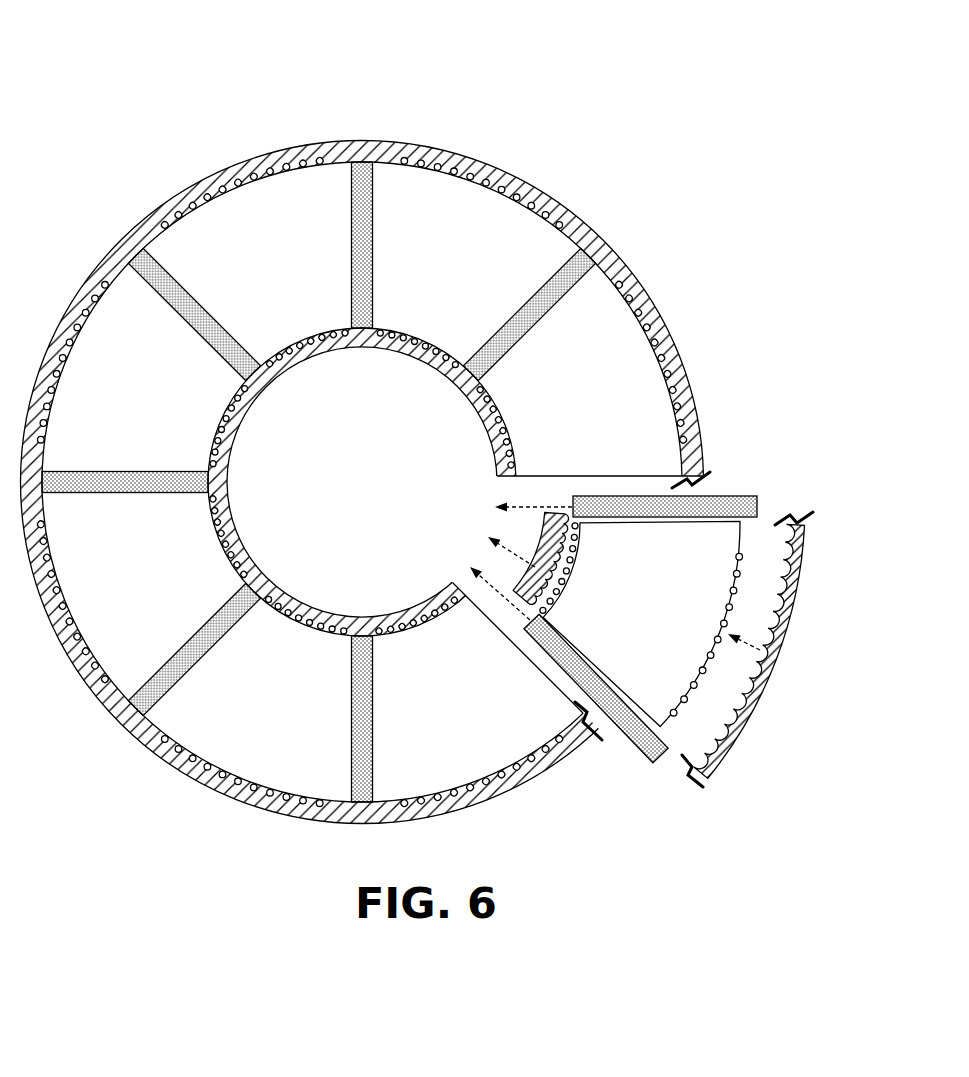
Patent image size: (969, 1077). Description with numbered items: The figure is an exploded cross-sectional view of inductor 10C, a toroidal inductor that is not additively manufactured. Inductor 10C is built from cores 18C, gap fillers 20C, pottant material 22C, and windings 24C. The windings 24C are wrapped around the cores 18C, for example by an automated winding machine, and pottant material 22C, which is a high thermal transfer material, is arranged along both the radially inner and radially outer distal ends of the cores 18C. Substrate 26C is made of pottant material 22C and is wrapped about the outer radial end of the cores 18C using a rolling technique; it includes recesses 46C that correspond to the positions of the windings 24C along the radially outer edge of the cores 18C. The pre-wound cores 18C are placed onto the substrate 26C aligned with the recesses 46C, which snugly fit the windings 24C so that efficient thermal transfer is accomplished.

The inductor 10C is at (122, 145).
The cores 18C is at (657, 604).
The gap fillers 20C is at (632, 742).
The pottant material 22C is at (545, 535).
The windings 24C is at (740, 552).
The substrate 26C is at (780, 658).
The recesses 46C is at (575, 514).